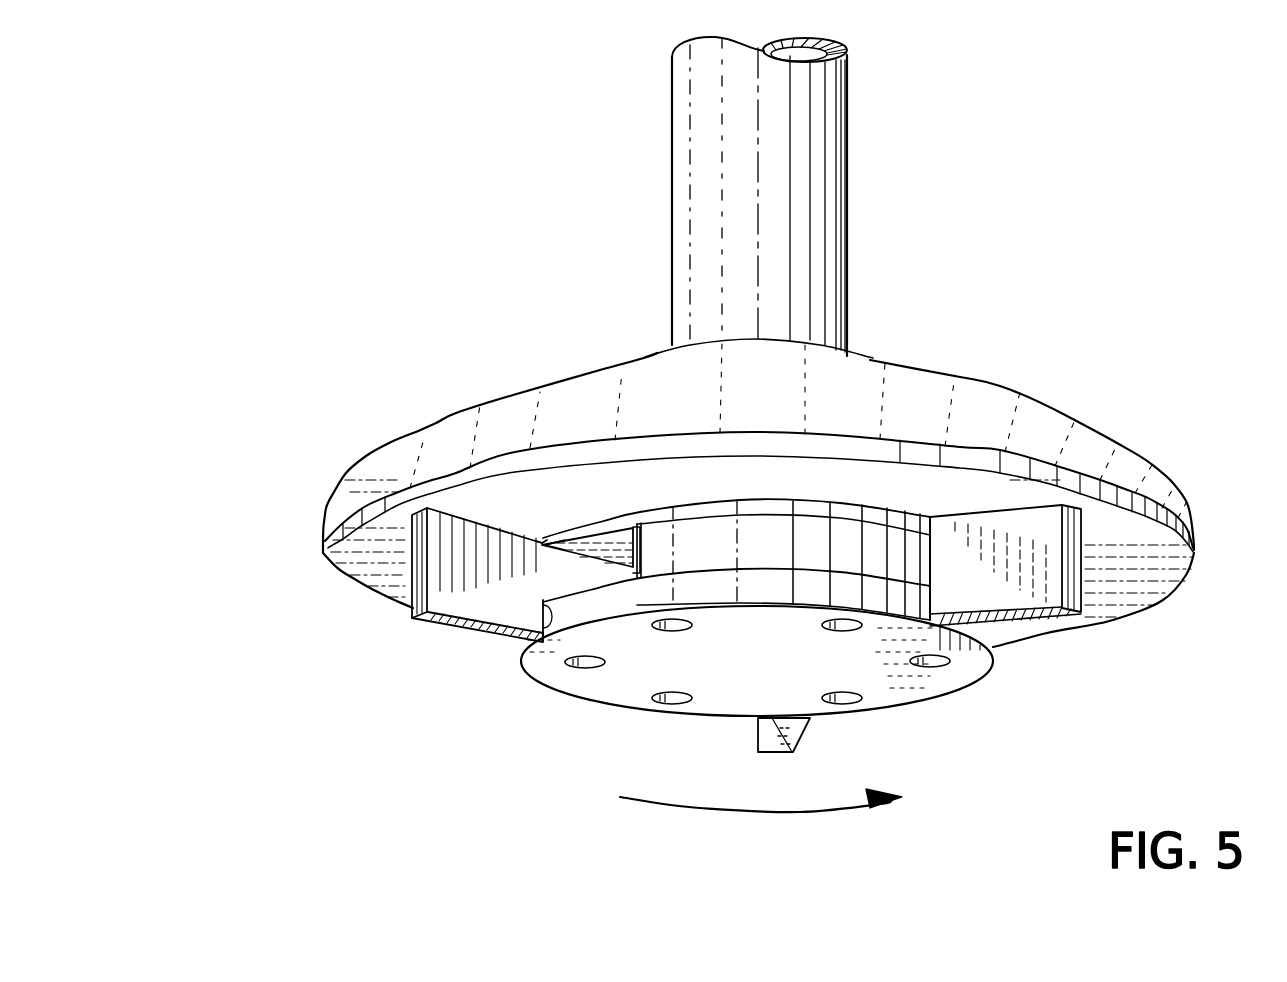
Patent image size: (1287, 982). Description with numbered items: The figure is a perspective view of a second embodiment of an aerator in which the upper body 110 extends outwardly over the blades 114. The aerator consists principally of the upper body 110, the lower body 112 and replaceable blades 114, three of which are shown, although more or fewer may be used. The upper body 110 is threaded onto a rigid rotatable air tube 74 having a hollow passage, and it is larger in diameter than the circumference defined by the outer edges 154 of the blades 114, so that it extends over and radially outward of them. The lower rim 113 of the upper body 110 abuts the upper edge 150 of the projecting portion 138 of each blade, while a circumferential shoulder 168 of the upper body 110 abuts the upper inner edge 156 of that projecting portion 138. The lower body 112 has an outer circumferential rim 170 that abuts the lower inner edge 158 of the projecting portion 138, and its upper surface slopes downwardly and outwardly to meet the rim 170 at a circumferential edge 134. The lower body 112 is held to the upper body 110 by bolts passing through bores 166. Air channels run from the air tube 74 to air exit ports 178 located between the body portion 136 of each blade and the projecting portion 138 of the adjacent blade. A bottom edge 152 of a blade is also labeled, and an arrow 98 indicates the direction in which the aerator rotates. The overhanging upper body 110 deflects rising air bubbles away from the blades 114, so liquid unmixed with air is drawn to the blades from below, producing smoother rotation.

The air tube 74 is at (688, 165).
The direction of rotation arrow 98 is at (793, 813).
The upper body 110 is at (1022, 396).
The lower body 112 is at (902, 704).
The lower rim 113 is at (345, 550).
The blades 114 is at (748, 602).
The circumferential edge 134 is at (700, 562).
The body portion 136 is at (902, 558).
The projecting portion 138 is at (440, 595).
The upper edge 150 is at (462, 508).
The bottom edge of vane 152 is at (455, 627).
The outer edges 154 is at (418, 562).
The upper inner edge 156 is at (547, 539).
The lower inner edge 158 is at (543, 610).
The bores 166 is at (941, 661).
The circumferential shoulder 168 is at (803, 511).
The outer circumferential rim 170 is at (636, 601).
The air exit ports 178 is at (609, 537).